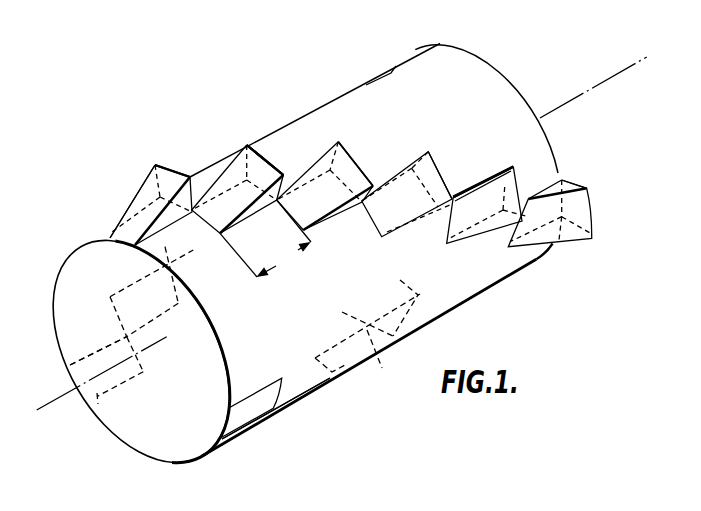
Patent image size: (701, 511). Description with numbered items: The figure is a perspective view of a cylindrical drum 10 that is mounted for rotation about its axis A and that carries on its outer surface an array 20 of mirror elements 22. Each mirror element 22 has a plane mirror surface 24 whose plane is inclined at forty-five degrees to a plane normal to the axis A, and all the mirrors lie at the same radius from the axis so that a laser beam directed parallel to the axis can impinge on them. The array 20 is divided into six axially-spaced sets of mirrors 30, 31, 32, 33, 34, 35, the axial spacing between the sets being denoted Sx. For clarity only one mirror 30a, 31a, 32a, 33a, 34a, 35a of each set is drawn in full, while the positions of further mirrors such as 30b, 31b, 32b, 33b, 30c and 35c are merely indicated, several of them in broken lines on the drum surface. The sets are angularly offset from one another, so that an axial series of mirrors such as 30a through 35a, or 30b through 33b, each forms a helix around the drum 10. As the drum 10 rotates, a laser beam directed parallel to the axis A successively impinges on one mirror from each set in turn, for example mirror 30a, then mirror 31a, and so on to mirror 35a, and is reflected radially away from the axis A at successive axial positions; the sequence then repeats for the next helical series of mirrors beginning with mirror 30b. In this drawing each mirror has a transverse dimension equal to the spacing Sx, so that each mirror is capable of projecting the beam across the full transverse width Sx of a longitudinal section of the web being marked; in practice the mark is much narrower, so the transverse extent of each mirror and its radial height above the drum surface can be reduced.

The cylindrical drum 10 is at (512, 62).
The array of mirror elements 20 is at (252, 122).
The mirror element 22 is at (155, 165).
The plane mirror surface 24 is at (145, 195).
The first set of mirrors 30 is at (121, 196).
The mirror of the first set 30a is at (123, 217).
The further mirror of the first set 30b is at (242, 417).
The further mirror of the first set 30c is at (97, 400).
The second set of mirrors 31 is at (202, 177).
The mirror of the second set 31a is at (235, 166).
The further mirror of the second set 31b is at (285, 403).
The third set of mirrors 32 is at (314, 144).
The mirror of the third set 32a is at (303, 173).
The further mirror of the third set 32b is at (335, 368).
The fourth set of mirrors 33 is at (382, 159).
The mirror of the fourth set 33a is at (408, 162).
The further mirror of the fourth set 33b is at (373, 365).
The fifth set of mirrors 34 is at (467, 174).
The mirror of the fifth set 34a is at (490, 173).
The sixth set of mirrors 35 is at (551, 254).
The mirror of the sixth set 35a is at (561, 180).
The further mirror of the sixth set 35c is at (397, 62).
The axial spacing Sx is at (265, 242).
The axis A is at (38, 431).